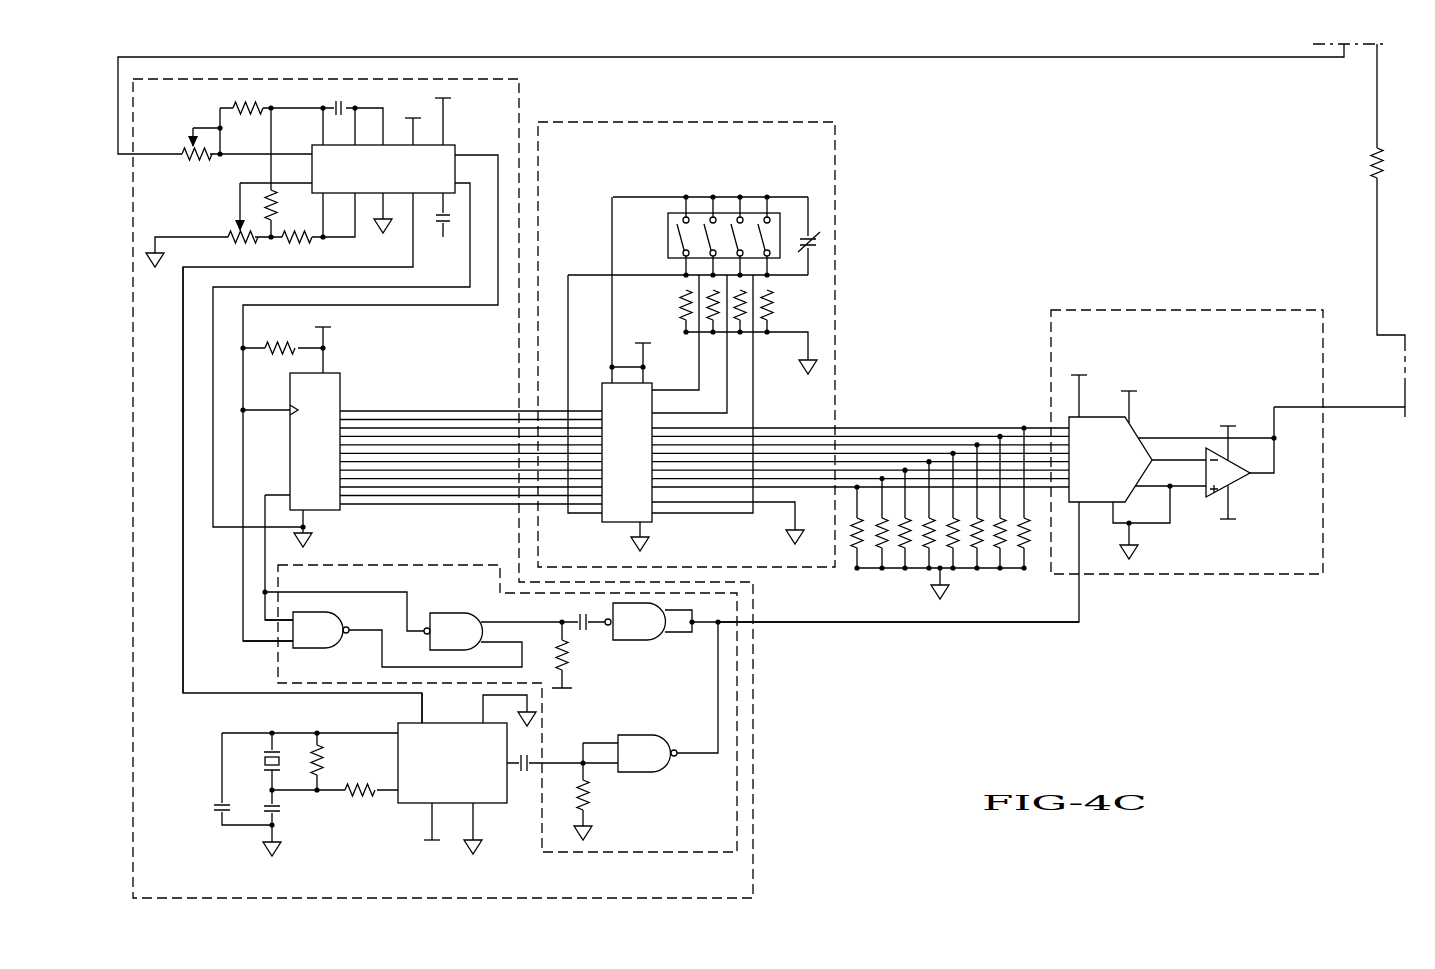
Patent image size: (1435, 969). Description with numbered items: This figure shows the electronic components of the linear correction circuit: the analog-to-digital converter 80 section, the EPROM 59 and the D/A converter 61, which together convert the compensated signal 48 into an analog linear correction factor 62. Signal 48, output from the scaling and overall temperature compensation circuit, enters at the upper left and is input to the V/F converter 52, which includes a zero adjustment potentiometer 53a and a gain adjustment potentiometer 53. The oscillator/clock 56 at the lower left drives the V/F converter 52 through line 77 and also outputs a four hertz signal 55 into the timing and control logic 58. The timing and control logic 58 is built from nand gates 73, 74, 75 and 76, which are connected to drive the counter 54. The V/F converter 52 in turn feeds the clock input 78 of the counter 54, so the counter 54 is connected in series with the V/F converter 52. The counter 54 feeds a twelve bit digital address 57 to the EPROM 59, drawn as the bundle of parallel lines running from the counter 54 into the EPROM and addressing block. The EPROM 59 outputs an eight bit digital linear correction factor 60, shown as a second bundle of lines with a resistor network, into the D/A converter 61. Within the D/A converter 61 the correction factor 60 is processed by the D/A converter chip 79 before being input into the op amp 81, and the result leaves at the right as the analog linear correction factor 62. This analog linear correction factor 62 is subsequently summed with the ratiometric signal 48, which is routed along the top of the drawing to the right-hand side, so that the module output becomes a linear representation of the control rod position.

The signal 48 is at (1180, 62).
The voltage-to-frequency converter 52 is at (452, 143).
The gain adjustment potentiometer 53 is at (202, 114).
The zero adjustment potentiometer 53a is at (226, 211).
The counter 54 is at (340, 373).
The 4 Hz signal 55 is at (560, 762).
The oscillator/clock 56 is at (408, 806).
The digital address 57 is at (420, 396).
The timing and control logic circuit 58 is at (661, 708).
The EPROM 59 is at (841, 173).
The digital linear correction factor 60 is at (903, 412).
The digital-to-analog converter 61 is at (1020, 437).
The analog linear correction factor 62 is at (1372, 407).
The nand gate 73 is at (645, 773).
The nand gate 74 is at (645, 642).
The nand gate 75 is at (452, 613).
The nand gate 76 is at (312, 650).
The line 77 is at (185, 621).
The clock input 78 is at (287, 411).
The D/A converter chip 79 is at (1134, 432).
The A/D converter 80 is at (757, 834).
The op amp 81 is at (1238, 484).